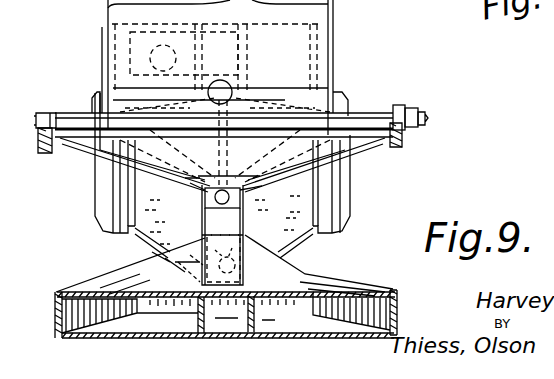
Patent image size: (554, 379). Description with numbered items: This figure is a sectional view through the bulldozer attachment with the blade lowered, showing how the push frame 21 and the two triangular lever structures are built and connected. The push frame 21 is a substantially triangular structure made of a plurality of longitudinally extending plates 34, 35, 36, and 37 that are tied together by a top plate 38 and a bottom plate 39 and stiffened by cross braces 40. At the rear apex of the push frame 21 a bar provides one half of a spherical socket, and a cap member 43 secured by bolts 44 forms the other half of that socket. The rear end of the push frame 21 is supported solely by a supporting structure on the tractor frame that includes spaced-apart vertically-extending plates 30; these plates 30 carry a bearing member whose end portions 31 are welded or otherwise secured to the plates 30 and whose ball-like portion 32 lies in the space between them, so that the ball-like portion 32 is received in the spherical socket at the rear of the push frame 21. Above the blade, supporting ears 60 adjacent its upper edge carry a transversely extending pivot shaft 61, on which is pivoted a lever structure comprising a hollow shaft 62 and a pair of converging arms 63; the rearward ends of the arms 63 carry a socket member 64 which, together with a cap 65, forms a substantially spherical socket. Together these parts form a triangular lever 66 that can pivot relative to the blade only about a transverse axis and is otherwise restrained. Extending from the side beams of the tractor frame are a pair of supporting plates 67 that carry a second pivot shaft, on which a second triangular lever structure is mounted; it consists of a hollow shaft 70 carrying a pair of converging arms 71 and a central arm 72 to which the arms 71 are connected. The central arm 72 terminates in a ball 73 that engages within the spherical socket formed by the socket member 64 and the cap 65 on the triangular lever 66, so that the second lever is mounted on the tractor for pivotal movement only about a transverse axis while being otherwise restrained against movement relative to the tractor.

The push frame 21 is at (368, 250).
The vertically-extending plates 30 is at (220, 224).
The end portions 31 is at (242, 277).
The ball-like portion 32 is at (256, 232).
The longitudinally extending plate 34 is at (400, 302).
The longitudinally extending plate 35 is at (258, 319).
The longitudinally extending plate 36 is at (198, 318).
The longitudinally extending plate 37 is at (55, 320).
The top plate 38 is at (145, 282).
The bottom plate 39 is at (272, 339).
The cross braces 40 is at (338, 320).
The cap member 43 is at (196, 286).
The bolts 44 is at (222, 235).
The supporting ears 60 is at (40, 152).
The pivot shaft 61 is at (426, 118).
The hollow shaft 62 is at (380, 106).
The converging arms 63 is at (95, 142).
The socket member 64 is at (205, 190).
The cap 65 is at (270, 198).
The triangular lever 66 is at (82, 113).
The supporting plates 67 is at (118, 203).
The hollow shaft 70 is at (252, 110).
The converging arms 71 is at (225, 156).
The central arm 72 is at (235, 142).
The ball 73 is at (205, 205).